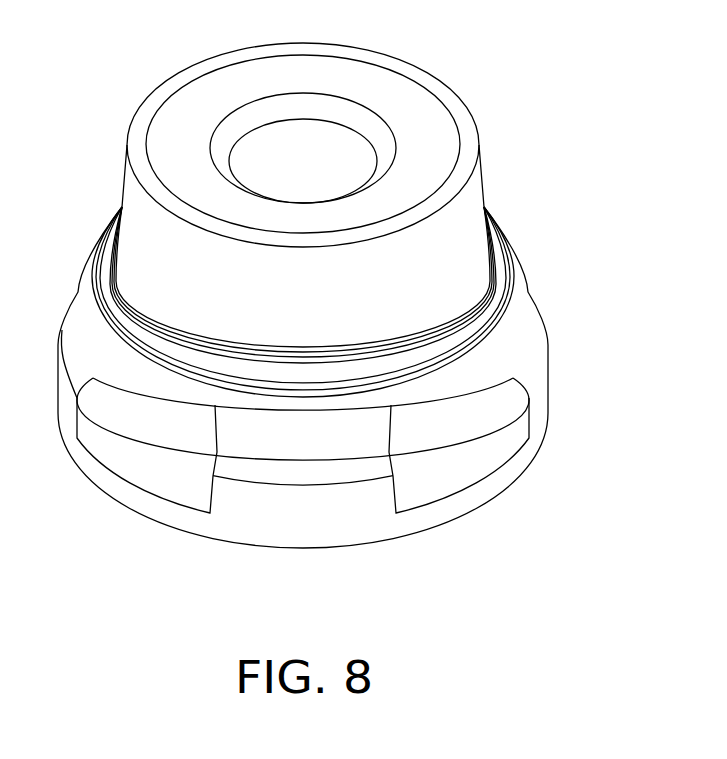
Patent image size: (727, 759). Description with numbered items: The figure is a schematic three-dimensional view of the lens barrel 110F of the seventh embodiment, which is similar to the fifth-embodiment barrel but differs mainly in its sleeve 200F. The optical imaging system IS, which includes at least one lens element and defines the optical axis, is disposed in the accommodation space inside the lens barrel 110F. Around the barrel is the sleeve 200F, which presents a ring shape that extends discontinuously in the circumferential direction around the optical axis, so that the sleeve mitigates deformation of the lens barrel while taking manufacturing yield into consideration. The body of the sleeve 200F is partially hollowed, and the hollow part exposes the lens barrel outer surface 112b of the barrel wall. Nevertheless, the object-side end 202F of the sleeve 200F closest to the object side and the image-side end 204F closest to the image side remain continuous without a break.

The optical imaging system IS is at (329, 170).
The lens barrel 110F is at (484, 197).
The object-side end 202F is at (502, 282).
The lens barrel outer surface 112b is at (497, 384).
The sleeve 200F is at (540, 407).
The image-side end 204F is at (541, 469).